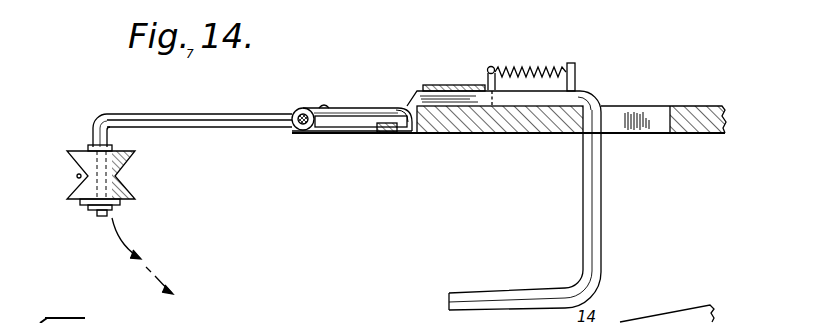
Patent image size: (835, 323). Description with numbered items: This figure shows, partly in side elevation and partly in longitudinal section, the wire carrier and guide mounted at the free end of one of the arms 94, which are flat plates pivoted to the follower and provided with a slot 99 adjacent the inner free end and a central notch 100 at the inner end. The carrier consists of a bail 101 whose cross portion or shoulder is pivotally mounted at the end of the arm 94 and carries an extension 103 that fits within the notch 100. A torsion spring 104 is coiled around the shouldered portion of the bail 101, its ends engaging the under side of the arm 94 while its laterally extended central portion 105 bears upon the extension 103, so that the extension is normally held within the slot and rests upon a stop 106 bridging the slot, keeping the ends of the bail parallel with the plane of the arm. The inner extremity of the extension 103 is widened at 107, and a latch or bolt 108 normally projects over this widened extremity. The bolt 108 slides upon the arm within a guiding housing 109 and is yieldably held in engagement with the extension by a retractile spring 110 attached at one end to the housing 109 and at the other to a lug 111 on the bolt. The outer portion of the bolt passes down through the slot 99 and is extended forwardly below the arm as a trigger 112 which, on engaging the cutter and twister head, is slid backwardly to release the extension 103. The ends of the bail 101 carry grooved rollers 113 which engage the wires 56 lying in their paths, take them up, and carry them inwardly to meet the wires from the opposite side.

The wires 56 is at (77, 176).
The arm 94 is at (518, 128).
The slot 99 is at (643, 136).
The notch 100 is at (347, 132).
The bail 101 is at (212, 117).
The extension 103 is at (351, 118).
The torsion spring 104 is at (302, 133).
The central portion of the torsion spring 105 is at (326, 108).
The stop 106 is at (388, 134).
The widened extremity 107 is at (400, 110).
The bolt 108 is at (432, 102).
The guiding housing 109 is at (472, 86).
The retractile spring 110 is at (547, 57).
The lug 111 is at (575, 63).
The trigger 112 is at (494, 292).
The grooved roller 113 is at (123, 176).